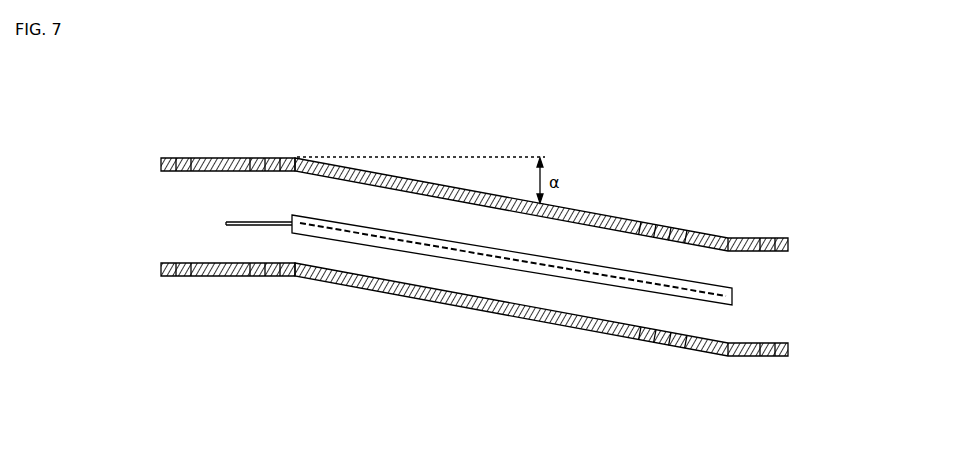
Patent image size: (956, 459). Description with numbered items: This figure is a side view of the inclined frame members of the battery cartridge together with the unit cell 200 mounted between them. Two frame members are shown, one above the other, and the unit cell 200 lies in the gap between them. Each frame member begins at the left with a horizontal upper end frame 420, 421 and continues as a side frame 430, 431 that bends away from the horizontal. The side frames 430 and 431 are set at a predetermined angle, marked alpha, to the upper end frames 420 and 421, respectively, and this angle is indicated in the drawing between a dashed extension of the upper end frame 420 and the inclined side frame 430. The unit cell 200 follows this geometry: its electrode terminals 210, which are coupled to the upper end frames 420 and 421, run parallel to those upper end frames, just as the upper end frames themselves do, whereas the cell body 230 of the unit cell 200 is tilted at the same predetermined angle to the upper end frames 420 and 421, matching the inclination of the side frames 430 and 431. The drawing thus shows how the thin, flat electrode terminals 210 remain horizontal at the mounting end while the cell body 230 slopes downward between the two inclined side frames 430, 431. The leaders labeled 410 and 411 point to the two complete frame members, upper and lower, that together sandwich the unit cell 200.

The unit cell 200 is at (560, 302).
The electrode terminals 210 is at (277, 225).
The cell body 230 is at (505, 263).
The upper guide 410 is at (406, 166).
The lower guide 411 is at (406, 353).
The upper end frame 420 is at (218, 158).
The upper end frame 421 is at (242, 277).
The side frame 430 is at (620, 213).
The side frame 431 is at (603, 336).